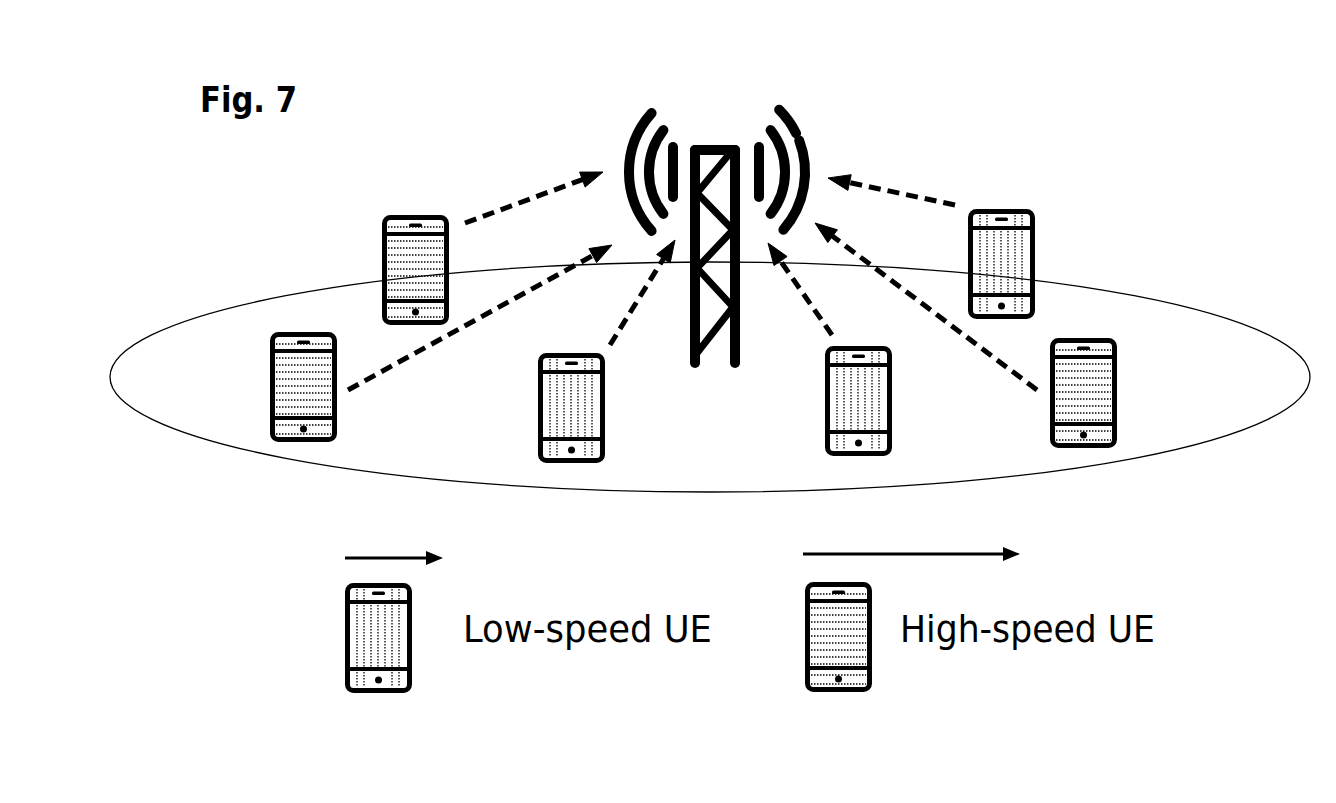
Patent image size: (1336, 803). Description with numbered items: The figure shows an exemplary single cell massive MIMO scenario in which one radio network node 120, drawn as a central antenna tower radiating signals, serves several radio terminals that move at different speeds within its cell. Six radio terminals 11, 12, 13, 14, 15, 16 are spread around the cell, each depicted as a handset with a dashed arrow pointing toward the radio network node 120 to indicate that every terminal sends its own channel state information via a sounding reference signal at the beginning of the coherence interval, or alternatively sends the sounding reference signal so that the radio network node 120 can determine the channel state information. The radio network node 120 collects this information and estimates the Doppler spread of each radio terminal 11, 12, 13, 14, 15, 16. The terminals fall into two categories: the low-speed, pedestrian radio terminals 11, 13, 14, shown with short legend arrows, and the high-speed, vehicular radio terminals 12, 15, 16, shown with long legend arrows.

The radio network node 120 is at (737, 148).
The radio terminal 11 is at (1035, 242).
The radio terminal 12 is at (1117, 368).
The radio terminal 13 is at (890, 380).
The radio terminal 14 is at (602, 380).
The radio terminal 15 is at (338, 393).
The radio terminal 16 is at (381, 238).